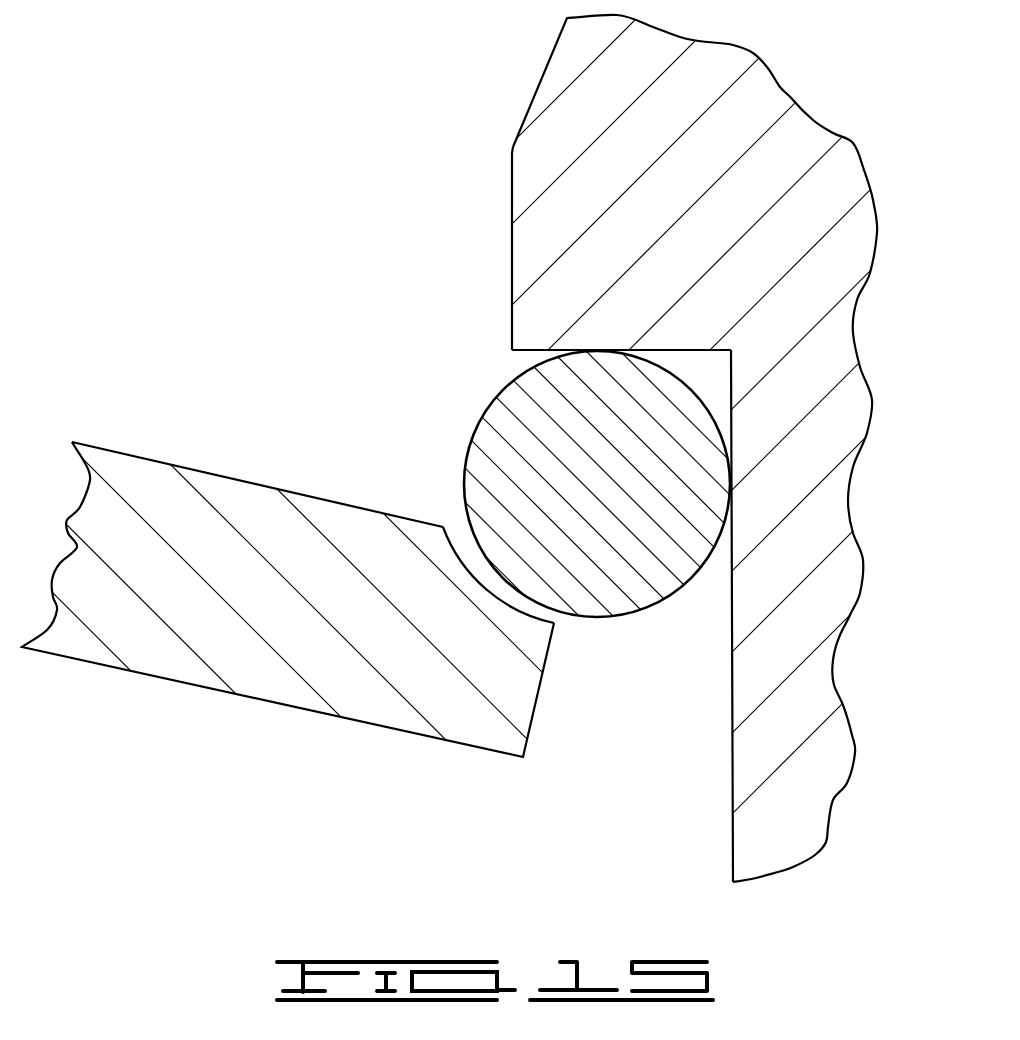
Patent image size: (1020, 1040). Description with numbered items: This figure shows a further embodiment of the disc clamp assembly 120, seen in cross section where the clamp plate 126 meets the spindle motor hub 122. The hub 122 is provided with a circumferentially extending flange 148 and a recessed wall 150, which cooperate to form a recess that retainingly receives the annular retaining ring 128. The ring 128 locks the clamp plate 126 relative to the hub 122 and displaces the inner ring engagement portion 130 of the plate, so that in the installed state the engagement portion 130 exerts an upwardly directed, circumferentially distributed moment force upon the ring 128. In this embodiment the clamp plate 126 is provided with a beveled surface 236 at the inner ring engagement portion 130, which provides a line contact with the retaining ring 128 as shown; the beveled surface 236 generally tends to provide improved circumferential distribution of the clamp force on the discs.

The disc clamp assembly 120 is at (280, 140).
The spindle motor hub 122 is at (773, 830).
The circumferentially extending flange 148 is at (510, 178).
The recessed wall 150 is at (730, 772).
The annular retaining ring 128 is at (523, 400).
The clamp plate 126 is at (255, 668).
The inner ring engagement portion 130 is at (355, 503).
The beveled surface 236 is at (557, 623).